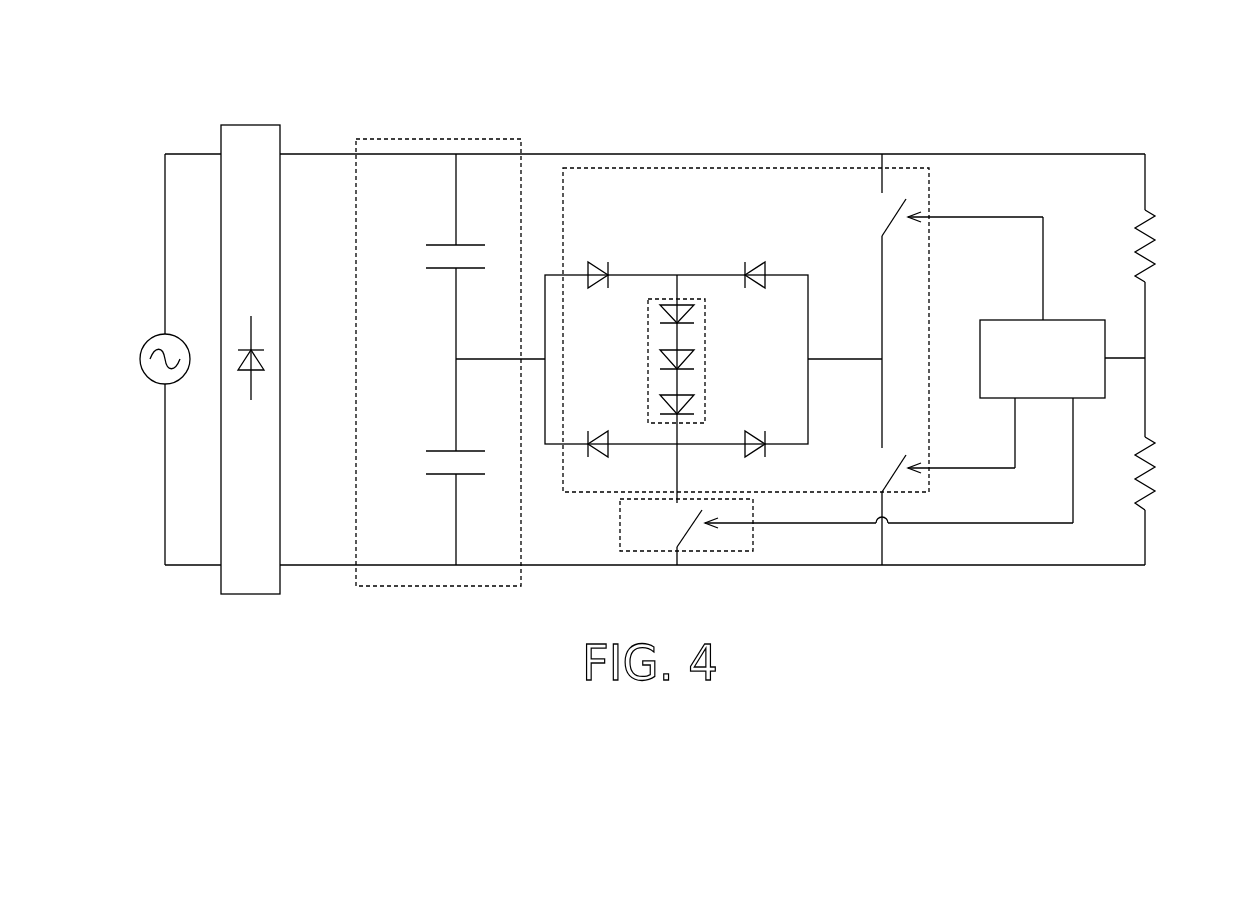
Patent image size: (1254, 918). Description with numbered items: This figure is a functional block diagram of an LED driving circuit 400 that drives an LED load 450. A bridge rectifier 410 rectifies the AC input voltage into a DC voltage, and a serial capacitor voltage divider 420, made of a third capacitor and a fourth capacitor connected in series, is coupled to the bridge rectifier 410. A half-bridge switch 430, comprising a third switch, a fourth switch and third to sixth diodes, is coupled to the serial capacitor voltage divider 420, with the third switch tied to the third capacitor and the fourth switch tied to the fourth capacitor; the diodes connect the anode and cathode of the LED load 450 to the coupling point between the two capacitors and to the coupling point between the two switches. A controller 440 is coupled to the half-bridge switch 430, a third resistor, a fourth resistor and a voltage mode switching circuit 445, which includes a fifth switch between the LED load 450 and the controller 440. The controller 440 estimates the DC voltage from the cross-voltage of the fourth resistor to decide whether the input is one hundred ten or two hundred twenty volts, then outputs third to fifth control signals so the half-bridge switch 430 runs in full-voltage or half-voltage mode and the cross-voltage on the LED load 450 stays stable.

The LED driving circuit 400 is at (1233, 62).
The bridge rectifier 410 is at (253, 125).
The serial capacitor voltage divider 420 is at (438, 139).
The half-bridge switch 430 is at (640, 168).
The controller 440 is at (1062, 387).
The voltage mode switching circuit 445 is at (692, 551).
The LED load 450 is at (705, 352).